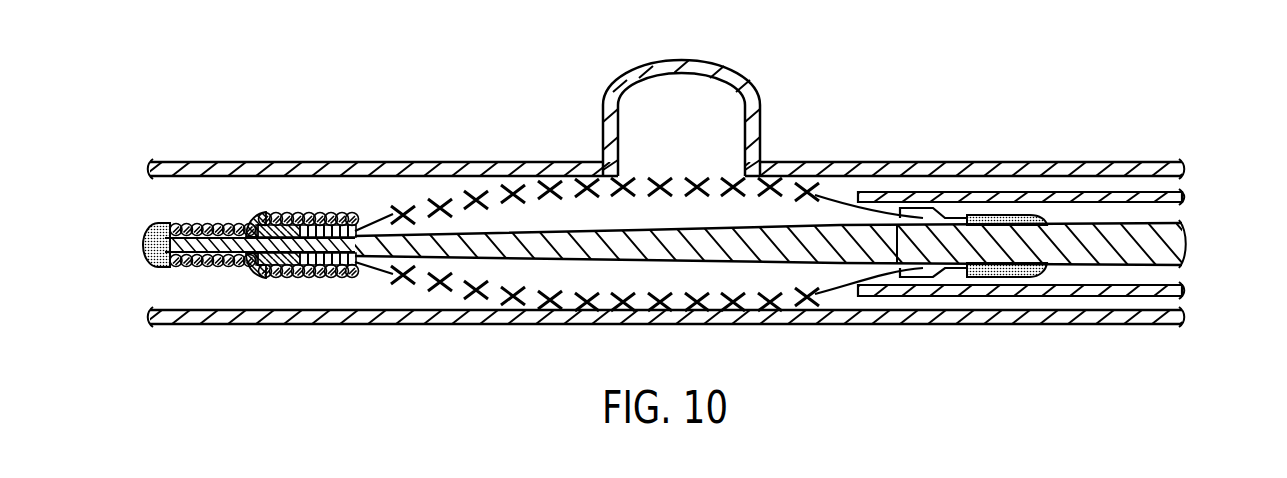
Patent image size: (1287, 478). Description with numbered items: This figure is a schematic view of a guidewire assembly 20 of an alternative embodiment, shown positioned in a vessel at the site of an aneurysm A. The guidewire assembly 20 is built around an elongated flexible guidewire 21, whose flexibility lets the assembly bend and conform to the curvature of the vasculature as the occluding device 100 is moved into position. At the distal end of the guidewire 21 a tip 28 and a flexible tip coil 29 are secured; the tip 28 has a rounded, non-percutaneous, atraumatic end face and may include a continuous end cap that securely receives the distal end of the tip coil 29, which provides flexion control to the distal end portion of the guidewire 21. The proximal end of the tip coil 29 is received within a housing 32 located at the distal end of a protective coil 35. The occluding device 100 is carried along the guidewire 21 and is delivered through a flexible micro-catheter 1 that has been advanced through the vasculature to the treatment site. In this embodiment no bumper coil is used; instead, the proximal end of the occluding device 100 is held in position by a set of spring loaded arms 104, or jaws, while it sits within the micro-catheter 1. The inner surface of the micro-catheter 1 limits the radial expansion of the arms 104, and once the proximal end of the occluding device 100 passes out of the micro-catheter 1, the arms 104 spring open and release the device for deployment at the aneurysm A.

The micro-catheter 1 is at (1055, 193).
The guidewire assembly 20 is at (288, 247).
The guidewire 21 is at (445, 237).
The tip 28 is at (150, 226).
The tip coil 29 is at (197, 225).
The housing 32 is at (260, 270).
The protective coil 35 is at (307, 273).
The occluding device 100 is at (538, 188).
The spring loaded arms 104 is at (945, 215).
The aneurysm A is at (732, 77).